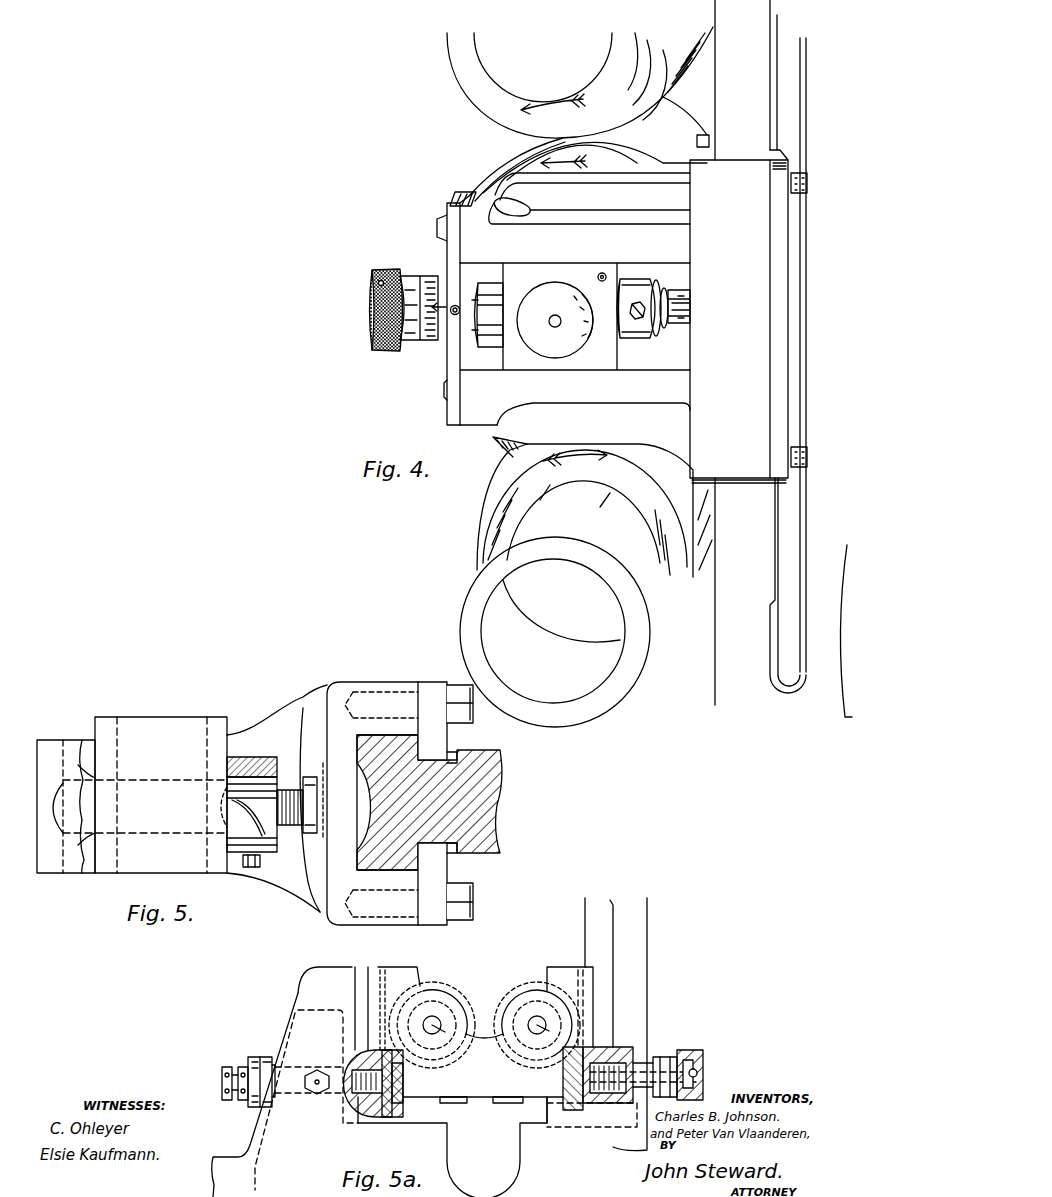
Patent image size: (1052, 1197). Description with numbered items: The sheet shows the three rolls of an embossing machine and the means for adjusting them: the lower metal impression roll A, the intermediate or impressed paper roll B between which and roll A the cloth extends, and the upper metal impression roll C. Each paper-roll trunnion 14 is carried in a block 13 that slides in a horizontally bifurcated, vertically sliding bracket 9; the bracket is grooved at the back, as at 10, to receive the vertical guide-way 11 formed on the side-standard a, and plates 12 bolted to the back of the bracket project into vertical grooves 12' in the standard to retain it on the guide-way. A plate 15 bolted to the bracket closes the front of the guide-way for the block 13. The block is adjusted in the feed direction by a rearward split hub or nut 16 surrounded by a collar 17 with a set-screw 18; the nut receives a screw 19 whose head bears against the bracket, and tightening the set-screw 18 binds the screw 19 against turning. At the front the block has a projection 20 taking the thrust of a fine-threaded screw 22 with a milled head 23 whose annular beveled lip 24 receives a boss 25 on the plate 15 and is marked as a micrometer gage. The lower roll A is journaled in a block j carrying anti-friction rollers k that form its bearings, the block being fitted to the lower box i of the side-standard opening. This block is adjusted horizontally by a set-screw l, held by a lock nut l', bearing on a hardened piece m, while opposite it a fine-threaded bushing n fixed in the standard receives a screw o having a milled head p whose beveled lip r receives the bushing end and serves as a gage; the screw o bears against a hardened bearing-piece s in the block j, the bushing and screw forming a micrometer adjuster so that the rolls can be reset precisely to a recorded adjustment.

In FIG. 4, the vertically sliding bracket 9 is at (739, 316).
In FIG. 5, the vertically sliding bracket 9 is at (313, 900).
In FIG. 5, the vertical groove 10 is at (327, 702).
In FIG. 5, the vertical guide-way 11 is at (429, 802).
In FIG. 5a, the vertical guide-way 11 is at (648, 952).
In FIG. 4, the plate 12 is at (808, 355).
In FIG. 5, the plate 12 is at (459, 884).
In FIG. 4, the vertical groove 12' is at (802, 585).
In FIG. 5, the vertical groove 12' is at (445, 738).
In FIG. 4, the block 13 is at (520, 365).
In FIG. 5, the block 13 is at (145, 795).
In FIG. 4, the trunnion 14 is at (536, 303).
In FIG. 4, the plate 15 is at (452, 415).
In FIG. 4, the split hub or nut 16 is at (643, 340).
In FIG. 5, the split hub or nut 16 is at (278, 838).
In FIG. 4, the collar 17 is at (659, 297).
In FIG. 5, the collar 17 is at (255, 760).
In FIG. 4, the set-screw 18 is at (630, 318).
In FIG. 5, the set-screw 18 is at (253, 868).
In FIG. 4, the screw 19 is at (668, 338).
In FIG. 5, the screw 19 is at (288, 788).
In FIG. 4, the projection 20 is at (492, 318).
In FIG. 5, the projection 20 is at (73, 873).
In FIG. 4, the fine-threaded screw 22 is at (484, 289).
In FIG. 4, the milled head 23 is at (390, 346).
In FIG. 4, the annular beveled lip 24 is at (433, 332).
In FIG. 4, the boss 25 is at (438, 280).
In FIG. 4, the lower impression roll A is at (480, 512).
In FIG. 4, the intermediate impressed roll B is at (476, 190).
In FIG. 4, the upper impression roll C is at (497, 110).
In FIG. 4, the side-standard a is at (726, 625).
In FIG. 5a, the side-standard a is at (298, 997).
In FIG. 5a, the block j is at (422, 1095).
In FIG. 5a, the anti-friction rollers k is at (502, 1017).
In FIG. 5a, the set-screw l is at (230, 1105).
In FIG. 5a, the lock nut l' is at (292, 1067).
In FIG. 5a, the hardened bearing-piece m is at (380, 1117).
In FIG. 5a, the internally threaded bushing n is at (625, 1053).
In FIG. 5a, the screw o is at (607, 1107).
In FIG. 5a, the milled head p is at (694, 1052).
In FIG. 5a, the beveled annular lip r is at (667, 1057).
In FIG. 5a, the hardened bearing-piece s is at (563, 1078).
In FIG. 5a, the box i is at (547, 1103).